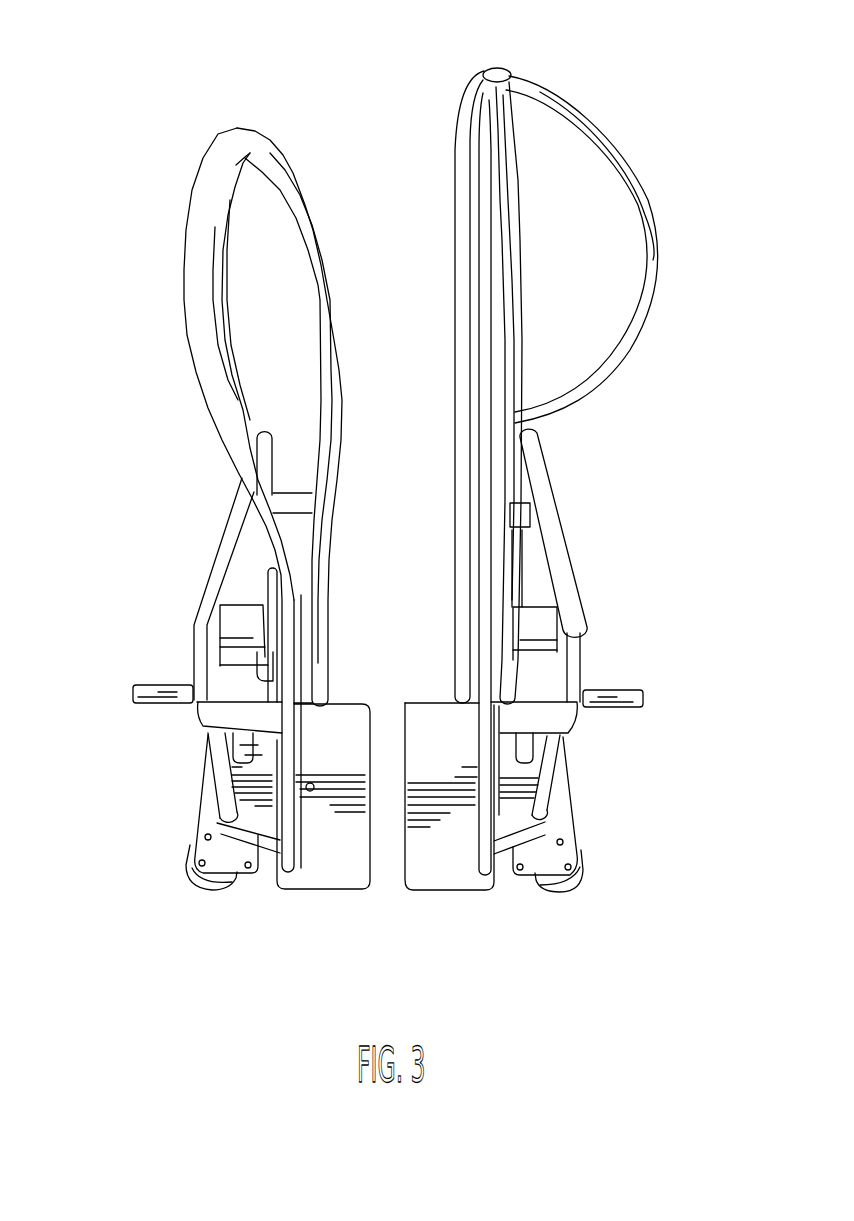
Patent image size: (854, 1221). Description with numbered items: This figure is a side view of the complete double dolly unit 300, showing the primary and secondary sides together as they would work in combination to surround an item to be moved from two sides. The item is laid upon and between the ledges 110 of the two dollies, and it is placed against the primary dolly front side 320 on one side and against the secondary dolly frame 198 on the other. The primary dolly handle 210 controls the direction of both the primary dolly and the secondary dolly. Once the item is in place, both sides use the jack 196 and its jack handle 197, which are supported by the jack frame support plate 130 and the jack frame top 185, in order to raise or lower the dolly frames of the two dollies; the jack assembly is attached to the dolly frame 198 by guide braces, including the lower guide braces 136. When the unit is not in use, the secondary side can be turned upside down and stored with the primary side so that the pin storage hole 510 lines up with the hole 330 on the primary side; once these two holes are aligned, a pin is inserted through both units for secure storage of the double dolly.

The double dolly unit 300 is at (403, 903).
The ledges 110 is at (450, 807).
The jack frame support plate 130 is at (536, 773).
The lower guide braces 136 is at (252, 840).
The jack frame top 185 is at (212, 578).
The jack 196 is at (233, 622).
The jack handle 197 is at (130, 707).
The dolly frame 198 is at (188, 286).
The primary dolly handle 210 is at (650, 237).
The primary dolly front side 320 is at (512, 287).
The hole 330 is at (512, 73).
The pin storage hole 510 is at (310, 778).